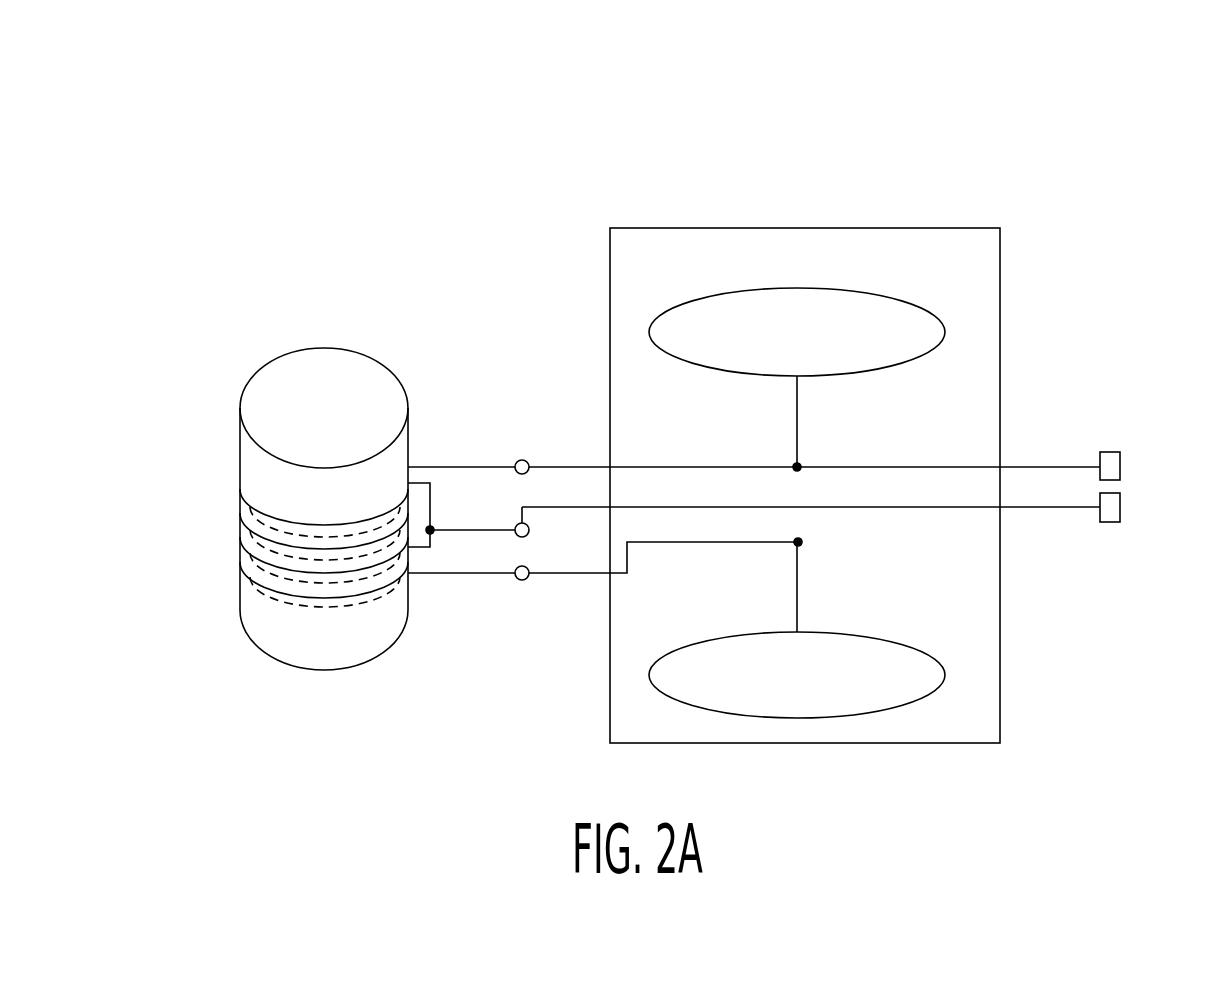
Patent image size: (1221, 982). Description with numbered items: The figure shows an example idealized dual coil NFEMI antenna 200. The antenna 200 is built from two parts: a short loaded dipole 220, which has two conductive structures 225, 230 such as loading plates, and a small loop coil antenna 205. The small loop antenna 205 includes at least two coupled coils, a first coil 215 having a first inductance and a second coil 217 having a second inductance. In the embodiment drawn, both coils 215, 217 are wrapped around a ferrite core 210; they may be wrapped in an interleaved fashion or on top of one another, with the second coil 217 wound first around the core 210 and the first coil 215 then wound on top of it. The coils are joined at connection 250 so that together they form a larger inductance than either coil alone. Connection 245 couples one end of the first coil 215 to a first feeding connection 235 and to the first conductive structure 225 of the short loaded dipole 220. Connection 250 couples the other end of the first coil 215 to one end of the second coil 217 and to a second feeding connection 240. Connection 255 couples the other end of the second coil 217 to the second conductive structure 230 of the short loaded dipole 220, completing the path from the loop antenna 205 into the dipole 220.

The dual coil NFEMI antenna 200 is at (185, 132).
The small loop coil antenna 205 is at (222, 340).
The ferrite core 210 is at (242, 389).
The first coil 215 is at (256, 500).
The second coil 217 is at (268, 595).
The short loaded dipole 220 is at (703, 228).
The first conductive structure 225 is at (943, 322).
The second conductive structure 230 is at (945, 675).
The first feeding connection 235 is at (1115, 452).
The second feeding connection 240 is at (1120, 515).
The connection 245 is at (522, 460).
The connection 250 is at (529, 532).
The connection 255 is at (522, 580).